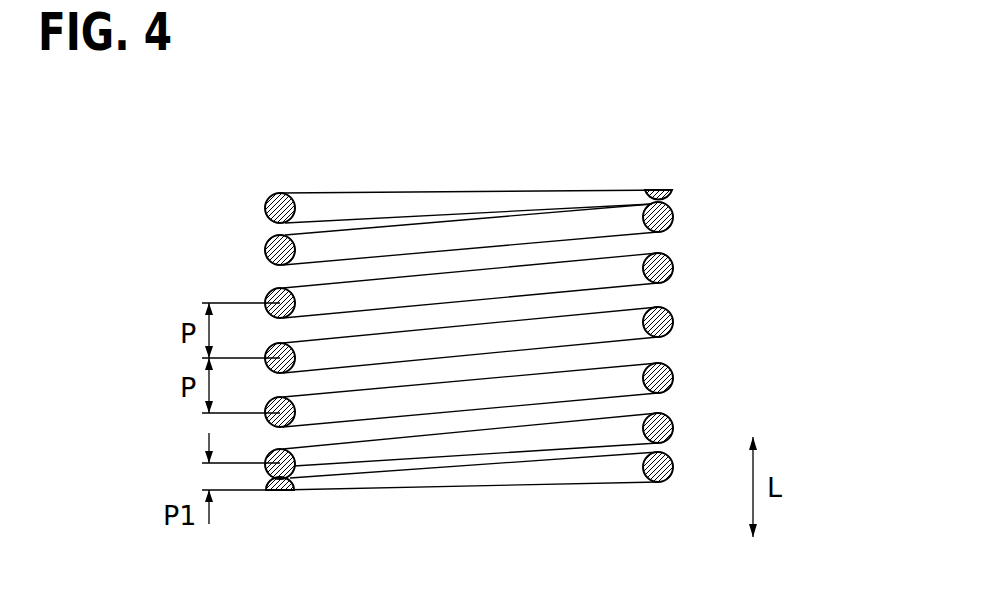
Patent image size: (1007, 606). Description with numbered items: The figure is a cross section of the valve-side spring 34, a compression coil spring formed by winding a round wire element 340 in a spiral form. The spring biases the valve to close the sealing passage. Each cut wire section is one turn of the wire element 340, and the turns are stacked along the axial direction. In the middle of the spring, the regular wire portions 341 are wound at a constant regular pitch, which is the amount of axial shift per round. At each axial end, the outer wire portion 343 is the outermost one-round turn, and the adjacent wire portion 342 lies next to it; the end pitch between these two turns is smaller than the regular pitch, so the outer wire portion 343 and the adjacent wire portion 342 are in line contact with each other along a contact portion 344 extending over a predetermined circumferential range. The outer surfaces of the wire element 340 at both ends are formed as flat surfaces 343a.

The valve-side spring 34 is at (278, 145).
The wire element 340 is at (268, 297).
The regular wire portion 341 is at (673, 322).
The adjacent wire portion 342 is at (668, 228).
The outer wire portion 343 is at (668, 200).
The flat surface 343a is at (658, 189).
The contact portion 344 is at (672, 207).